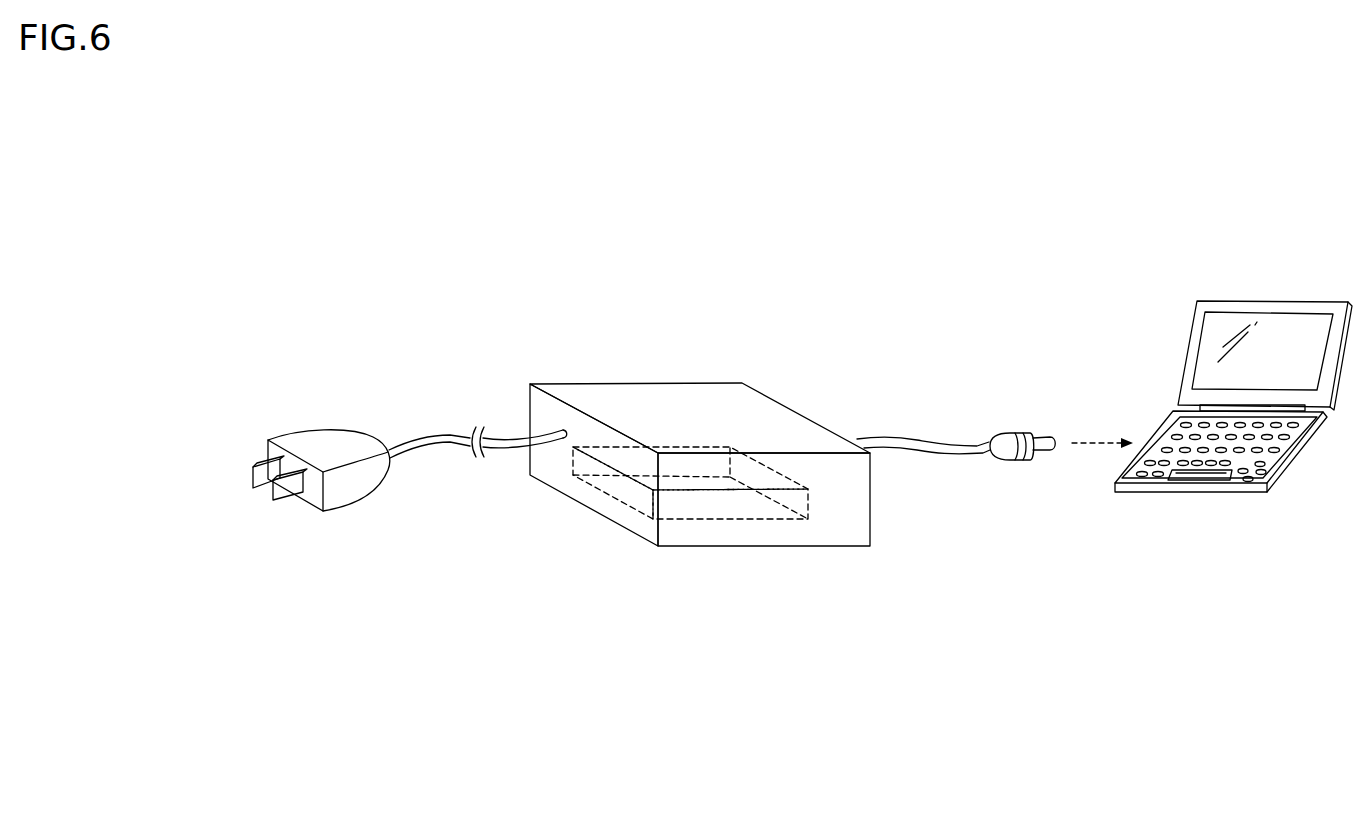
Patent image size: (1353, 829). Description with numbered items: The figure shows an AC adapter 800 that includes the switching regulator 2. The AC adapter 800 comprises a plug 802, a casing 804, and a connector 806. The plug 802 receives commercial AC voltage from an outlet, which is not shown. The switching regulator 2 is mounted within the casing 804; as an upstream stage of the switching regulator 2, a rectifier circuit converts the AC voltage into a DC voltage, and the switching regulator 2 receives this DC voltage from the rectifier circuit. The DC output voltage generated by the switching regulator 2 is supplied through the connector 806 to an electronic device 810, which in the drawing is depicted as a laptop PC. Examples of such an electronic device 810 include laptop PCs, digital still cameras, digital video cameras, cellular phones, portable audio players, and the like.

The AC adapter 800 is at (765, 728).
The plug 802 is at (327, 445).
The casing 804 is at (627, 381).
The switching regulator 2 is at (720, 503).
The connector 806 is at (1005, 432).
The electronic device 810 is at (1285, 298).